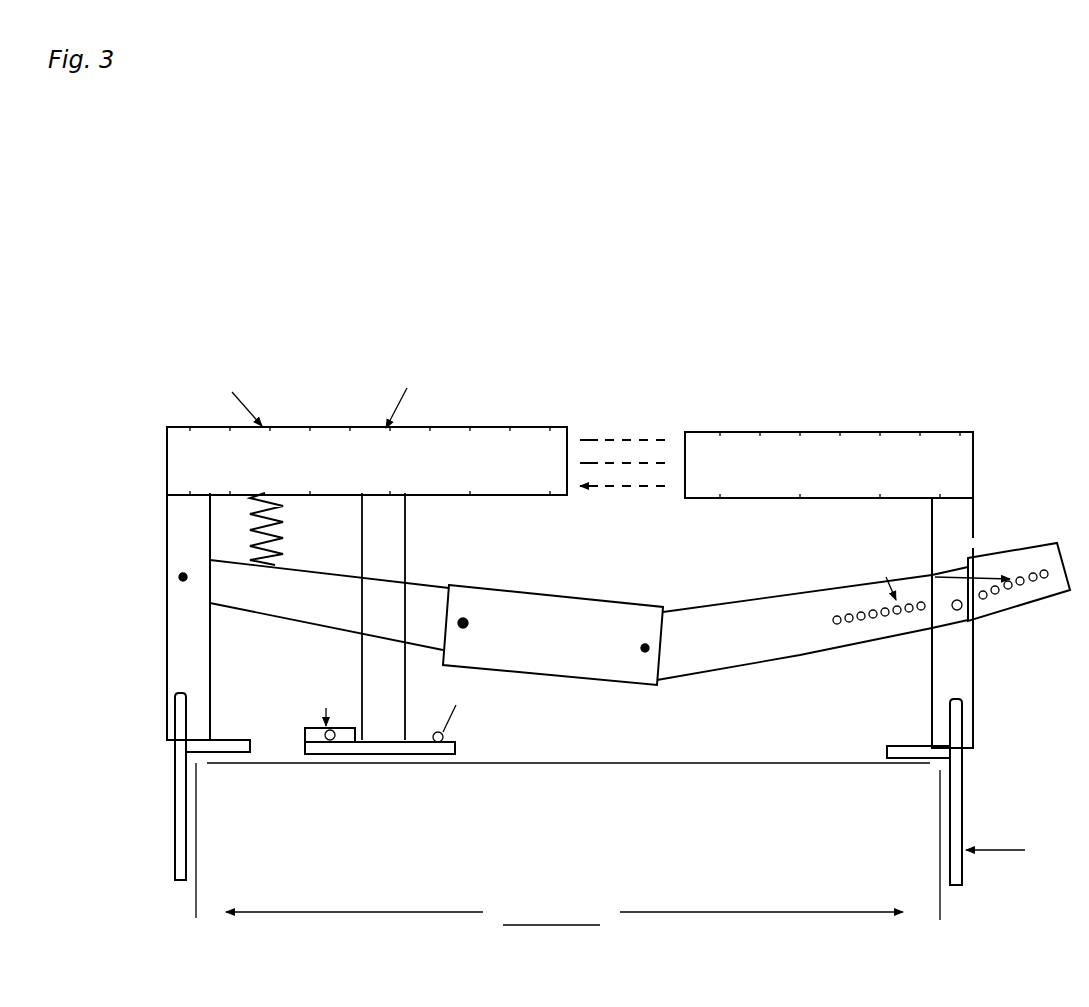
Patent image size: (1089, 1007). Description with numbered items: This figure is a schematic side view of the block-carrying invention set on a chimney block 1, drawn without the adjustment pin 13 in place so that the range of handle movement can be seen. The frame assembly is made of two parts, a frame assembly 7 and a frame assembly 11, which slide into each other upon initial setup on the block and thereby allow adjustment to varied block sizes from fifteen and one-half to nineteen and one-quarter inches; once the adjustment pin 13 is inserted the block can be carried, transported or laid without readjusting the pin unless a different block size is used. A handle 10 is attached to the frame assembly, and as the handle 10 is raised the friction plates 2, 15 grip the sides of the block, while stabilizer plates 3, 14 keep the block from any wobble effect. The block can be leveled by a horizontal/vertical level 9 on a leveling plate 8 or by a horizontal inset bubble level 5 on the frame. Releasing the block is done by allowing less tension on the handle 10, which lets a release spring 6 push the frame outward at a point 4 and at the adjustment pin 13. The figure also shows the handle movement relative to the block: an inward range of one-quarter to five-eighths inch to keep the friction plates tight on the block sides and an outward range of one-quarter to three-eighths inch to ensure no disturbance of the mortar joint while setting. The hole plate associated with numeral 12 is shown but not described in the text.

The chimney block 1 is at (564, 877).
The friction plate 2 is at (173, 828).
The stabilizer plate 3 is at (245, 736).
The point 4 is at (178, 563).
The inset bubble level 5 is at (281, 418).
The release spring 6 is at (276, 561).
The frame assembly 7 is at (503, 452).
The leveling plate 8 is at (395, 756).
The horizontal/vertical level 9 is at (412, 697).
The handle 10 is at (612, 668).
The frame assembly 11 is at (708, 421).
The adjustment plate 12 is at (1005, 563).
The adjustment pin 13 is at (965, 612).
The stabilizer plate 14 is at (908, 746).
The friction plate 15 is at (962, 790).